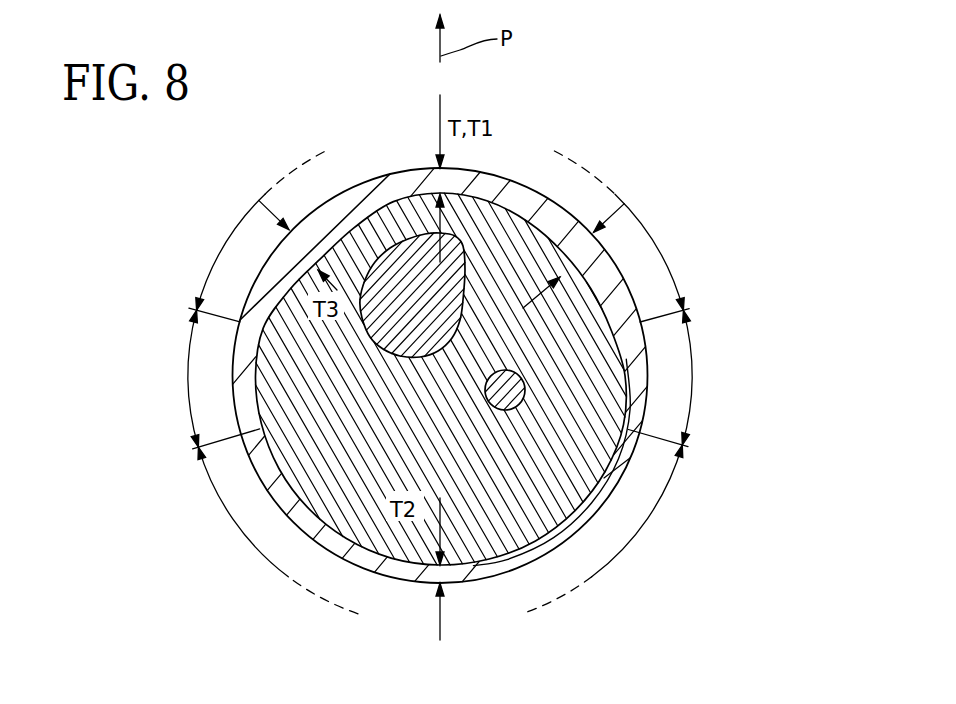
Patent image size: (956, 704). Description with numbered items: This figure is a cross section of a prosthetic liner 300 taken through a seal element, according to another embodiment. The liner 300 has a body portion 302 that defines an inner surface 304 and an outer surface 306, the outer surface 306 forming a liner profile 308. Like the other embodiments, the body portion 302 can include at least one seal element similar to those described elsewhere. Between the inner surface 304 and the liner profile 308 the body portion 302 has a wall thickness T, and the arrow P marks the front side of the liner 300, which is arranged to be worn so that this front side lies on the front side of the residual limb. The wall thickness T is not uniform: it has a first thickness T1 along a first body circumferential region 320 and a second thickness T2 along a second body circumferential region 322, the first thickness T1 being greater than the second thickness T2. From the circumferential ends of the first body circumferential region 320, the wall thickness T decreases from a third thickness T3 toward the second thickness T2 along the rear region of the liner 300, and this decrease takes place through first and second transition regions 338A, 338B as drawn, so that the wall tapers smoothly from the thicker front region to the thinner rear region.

The prosthetic liner 300 is at (672, 160).
The body portion 302 is at (387, 165).
The inner surface 304 is at (510, 556).
The outer surface 306 is at (506, 178).
The liner profile 308 is at (558, 313).
The first body circumferential region 320 is at (222, 256).
The second body circumferential region 322 is at (236, 523).
The first transition region 338A is at (188, 373).
The second transition region 338B is at (692, 372).